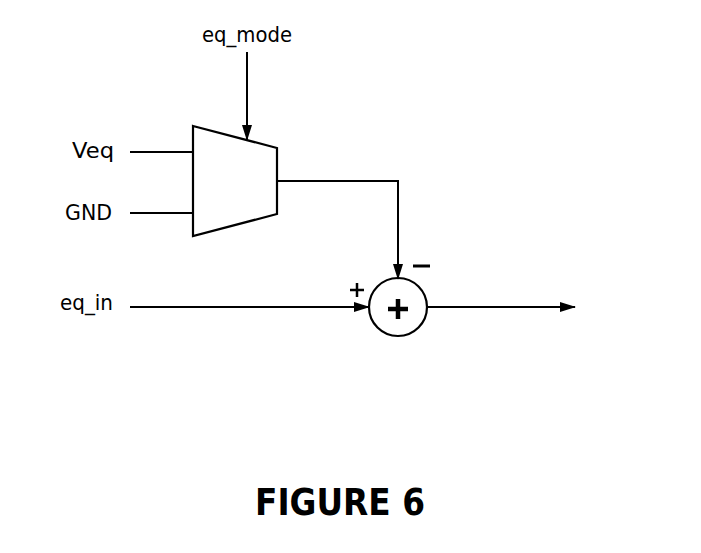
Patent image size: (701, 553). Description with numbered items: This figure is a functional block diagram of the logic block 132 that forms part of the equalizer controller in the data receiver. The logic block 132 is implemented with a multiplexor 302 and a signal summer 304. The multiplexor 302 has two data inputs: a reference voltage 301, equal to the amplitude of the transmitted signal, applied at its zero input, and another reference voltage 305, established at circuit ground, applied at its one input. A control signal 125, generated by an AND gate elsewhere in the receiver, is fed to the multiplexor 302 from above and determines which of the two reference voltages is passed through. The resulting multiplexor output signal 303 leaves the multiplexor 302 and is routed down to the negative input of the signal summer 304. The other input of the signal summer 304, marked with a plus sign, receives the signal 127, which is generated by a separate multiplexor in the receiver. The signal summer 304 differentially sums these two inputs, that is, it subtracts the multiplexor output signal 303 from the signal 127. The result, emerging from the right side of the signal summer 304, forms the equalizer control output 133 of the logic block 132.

The control signal 125 is at (247, 82).
The signal 127 is at (190, 307).
The logic block 132 is at (493, 420).
The equalizer control output 133 is at (518, 307).
The reference voltage 301 is at (153, 152).
The multiplexor 302 is at (277, 163).
The multiplexor output signal 303 is at (398, 208).
The signal summer 304 is at (413, 332).
The reference voltage 305 is at (145, 213).